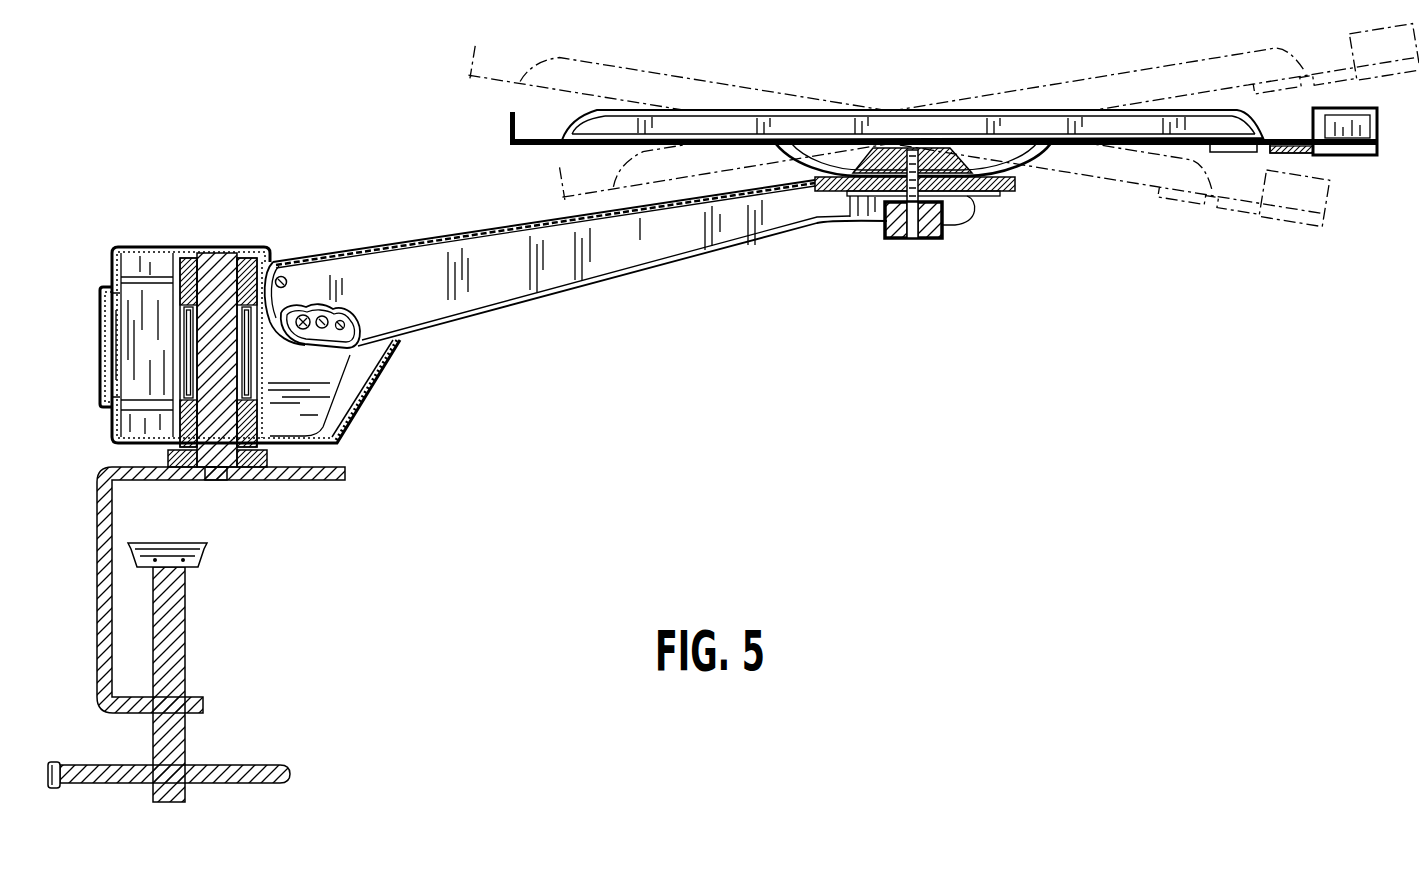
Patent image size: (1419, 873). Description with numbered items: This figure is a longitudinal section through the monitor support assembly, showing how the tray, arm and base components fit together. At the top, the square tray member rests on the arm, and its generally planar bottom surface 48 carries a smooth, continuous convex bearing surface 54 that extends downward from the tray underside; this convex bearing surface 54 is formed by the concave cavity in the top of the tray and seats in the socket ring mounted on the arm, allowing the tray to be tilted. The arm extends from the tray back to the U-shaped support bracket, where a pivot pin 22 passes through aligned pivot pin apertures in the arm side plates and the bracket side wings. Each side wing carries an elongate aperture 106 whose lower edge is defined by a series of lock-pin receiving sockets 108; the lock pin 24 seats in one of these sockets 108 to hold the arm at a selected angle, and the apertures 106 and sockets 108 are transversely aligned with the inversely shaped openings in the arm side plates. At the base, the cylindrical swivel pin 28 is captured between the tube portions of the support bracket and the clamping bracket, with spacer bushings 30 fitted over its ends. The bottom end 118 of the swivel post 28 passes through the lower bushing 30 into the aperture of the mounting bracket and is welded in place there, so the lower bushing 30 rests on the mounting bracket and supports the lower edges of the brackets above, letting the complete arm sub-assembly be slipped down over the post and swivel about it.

The pivot pin 22 is at (281, 276).
The lock pin 24 is at (324, 316).
The swivel pin 28 is at (212, 285).
The spacer bushings 30 is at (178, 258).
The bottom surface 48 is at (1173, 142).
The convex bearing surface 54 is at (977, 157).
The elongate aperture 106 is at (340, 336).
The lock-pin receiving sockets 108 is at (303, 315).
The bottom end of the swivel post 118 is at (218, 480).